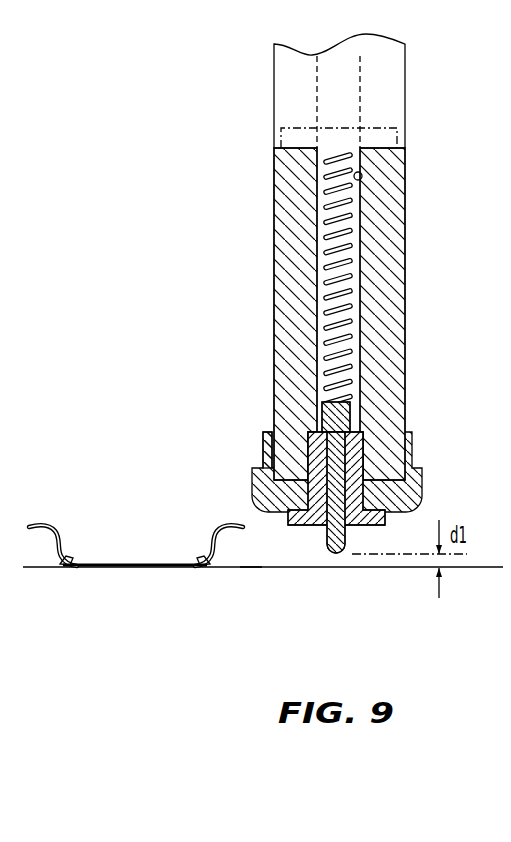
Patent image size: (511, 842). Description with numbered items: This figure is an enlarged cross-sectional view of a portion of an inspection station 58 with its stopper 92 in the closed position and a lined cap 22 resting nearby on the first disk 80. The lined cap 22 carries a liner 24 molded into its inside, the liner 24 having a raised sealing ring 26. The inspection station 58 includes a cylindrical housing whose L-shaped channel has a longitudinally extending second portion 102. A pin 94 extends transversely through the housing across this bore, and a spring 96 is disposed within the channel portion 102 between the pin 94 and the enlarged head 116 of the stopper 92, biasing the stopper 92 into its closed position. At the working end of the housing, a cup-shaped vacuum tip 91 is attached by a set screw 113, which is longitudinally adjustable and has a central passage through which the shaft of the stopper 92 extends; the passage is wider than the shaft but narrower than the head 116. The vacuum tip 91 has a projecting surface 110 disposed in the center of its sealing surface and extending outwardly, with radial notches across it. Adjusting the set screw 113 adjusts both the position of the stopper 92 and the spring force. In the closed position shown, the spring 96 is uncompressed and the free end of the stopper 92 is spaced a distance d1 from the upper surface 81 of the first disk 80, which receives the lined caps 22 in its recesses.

The lined cap 22 is at (47, 506).
The liner 24 is at (160, 563).
The raised sealing ring 26 is at (70, 555).
The inspection station 58 is at (416, 232).
The first disk 80 is at (478, 568).
The upper surface 81 is at (250, 567).
The vacuum tip 91 is at (380, 503).
The stopper 92 is at (383, 482).
The pin 94 is at (280, 139).
The spring 96 is at (345, 292).
The second portion 102 is at (362, 176).
The projecting surface 110 is at (380, 530).
The set screw 113 is at (265, 432).
The enlarged head 116 is at (358, 411).